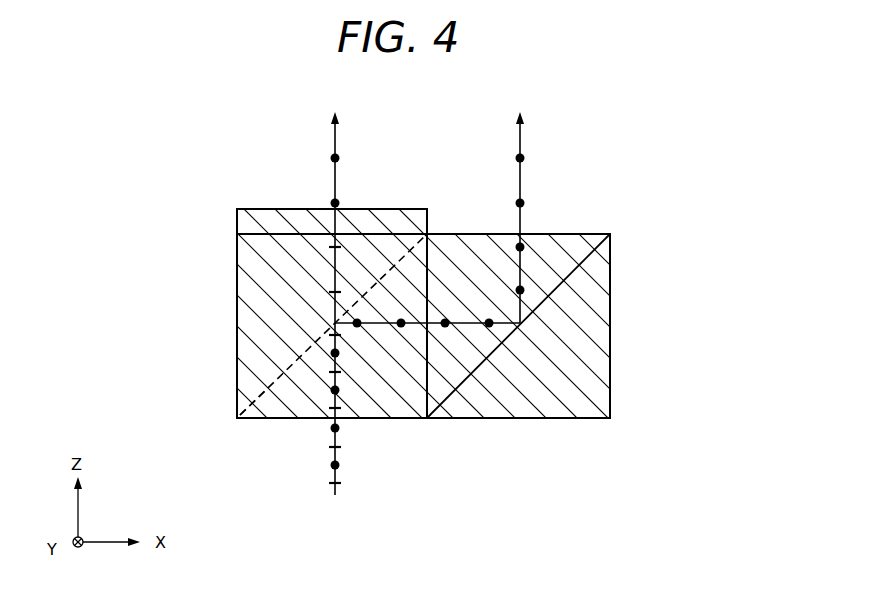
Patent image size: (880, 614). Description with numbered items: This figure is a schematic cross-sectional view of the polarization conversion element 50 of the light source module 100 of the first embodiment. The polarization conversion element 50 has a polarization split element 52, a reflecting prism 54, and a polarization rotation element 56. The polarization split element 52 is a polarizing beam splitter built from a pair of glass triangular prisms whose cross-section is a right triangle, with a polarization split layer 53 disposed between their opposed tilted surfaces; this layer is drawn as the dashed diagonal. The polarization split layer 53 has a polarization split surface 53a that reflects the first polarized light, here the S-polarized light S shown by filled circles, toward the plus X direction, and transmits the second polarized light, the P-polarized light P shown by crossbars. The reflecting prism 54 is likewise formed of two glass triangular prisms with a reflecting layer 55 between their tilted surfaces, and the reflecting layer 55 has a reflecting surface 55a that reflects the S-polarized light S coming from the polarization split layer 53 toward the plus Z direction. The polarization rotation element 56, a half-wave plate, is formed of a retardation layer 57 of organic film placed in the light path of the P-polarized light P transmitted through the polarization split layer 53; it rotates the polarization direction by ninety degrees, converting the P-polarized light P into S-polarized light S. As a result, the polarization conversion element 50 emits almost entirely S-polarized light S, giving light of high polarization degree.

The optical unit 100 is at (676, 126).
The polarization conversion element 50 is at (634, 212).
The polarization split element 52 is at (270, 316).
The polarization split layer 53 is at (265, 357).
The polarization split surface 53a is at (275, 400).
The reflecting prism 54 is at (487, 262).
The reflecting layer 55 is at (565, 274).
The reflecting surface 55a is at (592, 252).
The polarization rotation element 56 is at (258, 223).
The retardation layer 57 is at (285, 218).
The P-polarized light P is at (335, 292).
The S-polarized light S is at (401, 328).